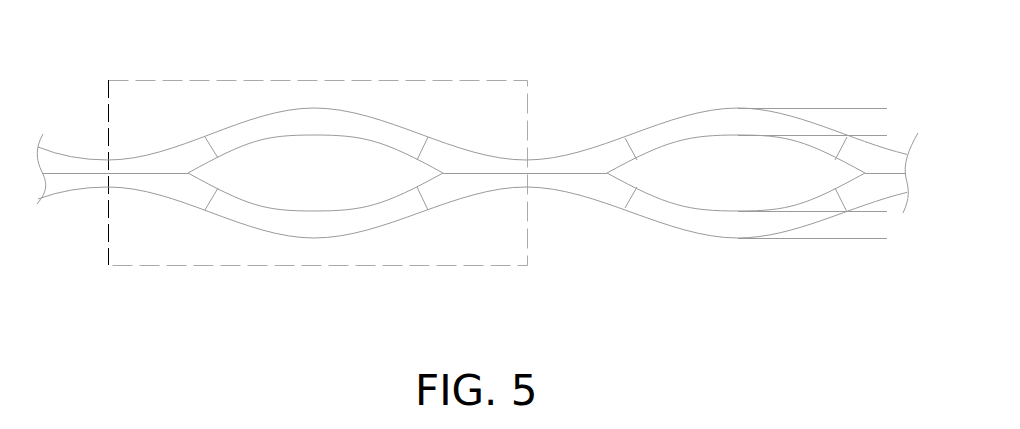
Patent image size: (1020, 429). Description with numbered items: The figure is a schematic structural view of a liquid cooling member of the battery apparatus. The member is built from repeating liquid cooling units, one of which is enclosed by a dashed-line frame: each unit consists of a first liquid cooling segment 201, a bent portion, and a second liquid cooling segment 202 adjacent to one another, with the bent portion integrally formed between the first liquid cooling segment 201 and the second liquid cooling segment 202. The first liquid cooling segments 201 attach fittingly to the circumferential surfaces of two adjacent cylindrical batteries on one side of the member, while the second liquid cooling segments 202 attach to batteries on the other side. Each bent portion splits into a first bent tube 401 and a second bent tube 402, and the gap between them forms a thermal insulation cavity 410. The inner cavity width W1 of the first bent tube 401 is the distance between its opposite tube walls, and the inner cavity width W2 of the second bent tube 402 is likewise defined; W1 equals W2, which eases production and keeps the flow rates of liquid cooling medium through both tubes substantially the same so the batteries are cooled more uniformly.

The first liquid cooling segment 201 is at (152, 177).
The second liquid cooling segment 202 is at (483, 175).
The first bent tube 401 is at (317, 125).
The second bent tube 402 is at (320, 225).
The thermal insulation cavity 410 is at (360, 182).
The width of the inner cavity of the first bent tube W1 is at (860, 109).
The width of the inner cavity of the second bent tube W2 is at (860, 212).